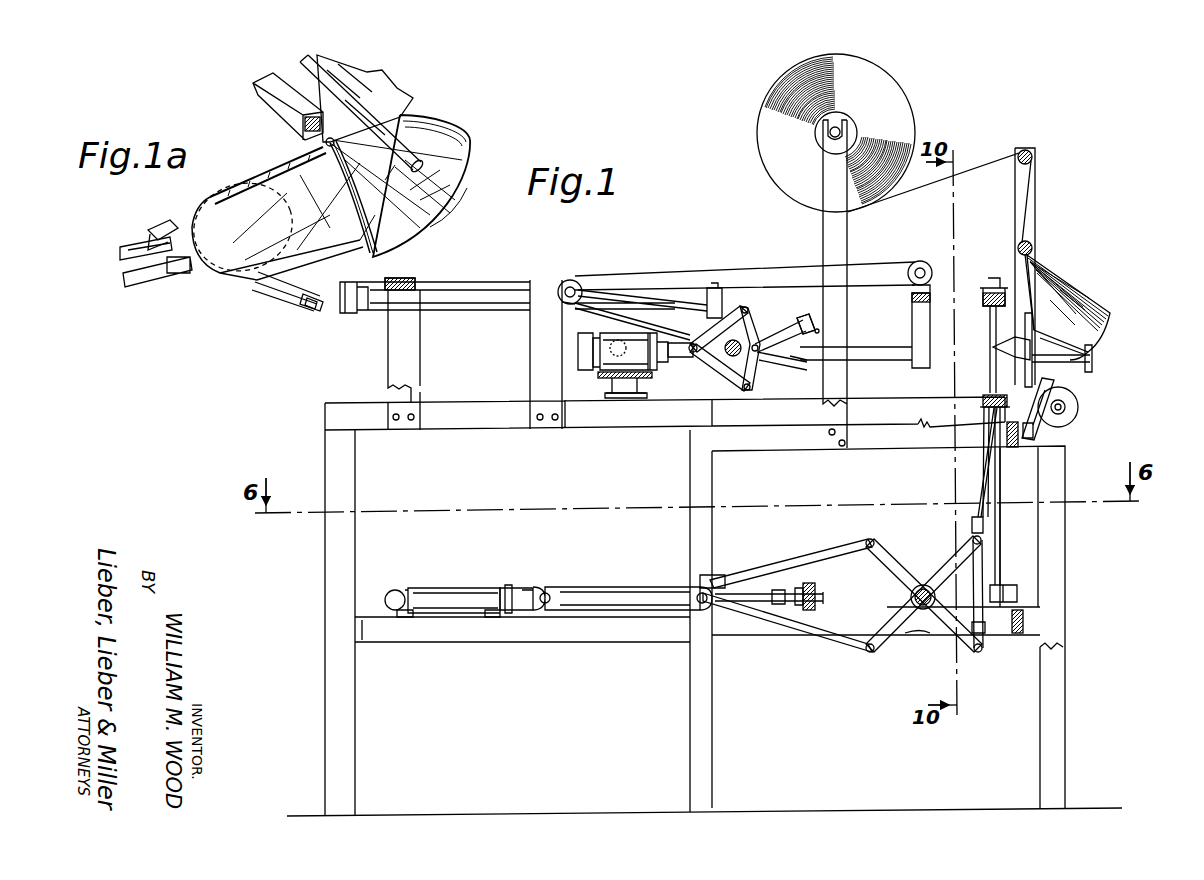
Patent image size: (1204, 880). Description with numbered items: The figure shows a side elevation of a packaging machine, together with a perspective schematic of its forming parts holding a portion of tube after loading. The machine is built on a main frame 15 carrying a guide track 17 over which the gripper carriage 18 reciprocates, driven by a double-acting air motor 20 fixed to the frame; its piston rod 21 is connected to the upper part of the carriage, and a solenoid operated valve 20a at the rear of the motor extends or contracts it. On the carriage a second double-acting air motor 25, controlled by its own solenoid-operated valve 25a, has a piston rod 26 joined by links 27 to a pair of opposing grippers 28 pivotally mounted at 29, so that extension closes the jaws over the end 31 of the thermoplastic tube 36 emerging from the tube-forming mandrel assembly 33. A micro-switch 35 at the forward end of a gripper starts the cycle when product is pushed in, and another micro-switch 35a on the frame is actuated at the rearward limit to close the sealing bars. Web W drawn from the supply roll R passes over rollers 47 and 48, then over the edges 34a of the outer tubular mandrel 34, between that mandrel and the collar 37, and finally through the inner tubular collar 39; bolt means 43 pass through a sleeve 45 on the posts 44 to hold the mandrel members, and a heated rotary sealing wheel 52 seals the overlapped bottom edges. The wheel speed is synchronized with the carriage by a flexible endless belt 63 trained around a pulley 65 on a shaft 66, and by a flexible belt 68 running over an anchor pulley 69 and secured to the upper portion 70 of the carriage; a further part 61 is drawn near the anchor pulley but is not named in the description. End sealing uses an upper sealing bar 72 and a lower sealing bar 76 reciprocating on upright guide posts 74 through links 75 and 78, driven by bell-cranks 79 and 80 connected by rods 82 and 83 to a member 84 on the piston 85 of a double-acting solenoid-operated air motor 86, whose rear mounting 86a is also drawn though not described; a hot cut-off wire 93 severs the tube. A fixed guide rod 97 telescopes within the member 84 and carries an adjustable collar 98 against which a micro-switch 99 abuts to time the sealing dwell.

In FIG. 1, the main frame 15 is at (325, 425).
In FIG. 1, the guide track 17 is at (876, 362).
In FIG. 1, the gripper carriage 18 is at (650, 380).
In FIG. 1, the double-acting air motor 20 is at (480, 300).
In FIG. 1, the solenoid operated valve 20a is at (355, 313).
In FIG. 1, the piston rod 21 is at (648, 282).
In FIG. 1, the double-acting air motor 25 is at (628, 334).
In FIG. 1, the solenoid-operated valve 25a is at (580, 344).
In FIG. 1, the piston rod 26 is at (677, 358).
In FIG. 1, the links 27 is at (742, 382).
In FIG. 1, the grippers 28 is at (800, 320).
In FIG. 1A, the grippers 28 is at (170, 262).
In FIG. 1, the pivot 29 is at (752, 390).
In FIG. 1, the tube end 31 is at (990, 356).
In FIG. 1A, the tube end 31 is at (195, 278).
In FIG. 1, the tube-forming mandrel assembly 33 is at (1098, 340).
In FIG. 1A, the tube-forming mandrel assembly 33 is at (478, 150).
In FIG. 1, the outer tubular mandrel 34 is at (1108, 313).
In FIG. 1A, the outer tubular mandrel 34 is at (366, 172).
In FIG. 1, the edges 34a is at (1090, 352).
In FIG. 1A, the edges 34a is at (462, 190).
In FIG. 1, the micro-switch 35 is at (815, 328).
In FIG. 1A, the micro-switch 35 is at (173, 226).
In FIG. 1, the micro-switch 35a is at (628, 400).
In FIG. 1, the thermoplastic tube 36 is at (993, 347).
In FIG. 1A, the thermoplastic tube 36 is at (277, 177).
In FIG. 1A, the collar 37 is at (326, 143).
In FIG. 1A, the tubular collar 39 is at (367, 197).
In FIG. 1, the bolt means 43 is at (1090, 364).
In FIG. 1, the posts 44 is at (1035, 438).
In FIG. 1, the sleeve 45 is at (1050, 360).
In FIG. 1, the roller 47 is at (1033, 156).
In FIG. 1, the roller 48 is at (1033, 247).
In FIG. 1A, the roller 48 is at (405, 142).
In FIG. 1, the heated rotary sealing wheel 52 is at (1078, 404).
In FIG. 1, the cylinder 61 is at (911, 300).
In FIG. 1, the flexible endless belt 63 is at (690, 333).
In FIG. 1, the pulley 65 is at (562, 296).
In FIG. 1, the shaft 66 is at (566, 304).
In FIG. 1, the flexible belt 68 is at (748, 270).
In FIG. 1, the anchor pulley 69 is at (926, 263).
In FIG. 1, the upper portion of carriage 70 is at (712, 288).
In FIG. 1, the upper sealing bar 72 is at (982, 298).
In FIG. 1A, the upper sealing bar 72 is at (268, 114).
In FIG. 1, the upright guide posts 74 is at (1003, 556).
In FIG. 1, the links 75 is at (976, 480).
In FIG. 1, the lower sealing bar 76 is at (982, 397).
In FIG. 1A, the lower sealing bar 76 is at (290, 304).
In FIG. 1, the links 78 is at (975, 570).
In FIG. 1, the bell-crank 79 is at (952, 555).
In FIG. 1, the bell-crank 80 is at (951, 624).
In FIG. 1, the rod 82 is at (832, 556).
In FIG. 1, the rod 83 is at (838, 640).
In FIG. 1, the member 84 is at (584, 612).
In FIG. 1, the piston 85 is at (520, 612).
In FIG. 1, the double-acting solenoid-operated air motor 86 is at (466, 602).
In FIG. 1, the pivot 86a is at (395, 592).
In FIG. 1A, the cut-off wire 93 is at (312, 311).
In FIG. 1, the fixed guide rod 97 is at (762, 600).
In FIG. 1, the collar 98 is at (779, 588).
In FIG. 1, the micro-switch 99 is at (718, 576).
In FIG. 1, the supply roll R is at (883, 111).
In FIG. 1, the web W is at (1028, 210).
In FIG. 1A, the web W is at (400, 95).